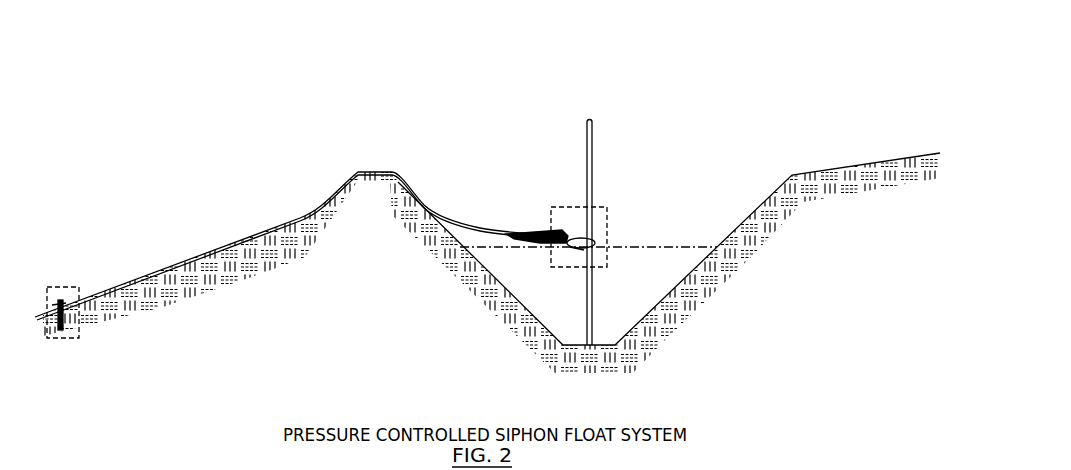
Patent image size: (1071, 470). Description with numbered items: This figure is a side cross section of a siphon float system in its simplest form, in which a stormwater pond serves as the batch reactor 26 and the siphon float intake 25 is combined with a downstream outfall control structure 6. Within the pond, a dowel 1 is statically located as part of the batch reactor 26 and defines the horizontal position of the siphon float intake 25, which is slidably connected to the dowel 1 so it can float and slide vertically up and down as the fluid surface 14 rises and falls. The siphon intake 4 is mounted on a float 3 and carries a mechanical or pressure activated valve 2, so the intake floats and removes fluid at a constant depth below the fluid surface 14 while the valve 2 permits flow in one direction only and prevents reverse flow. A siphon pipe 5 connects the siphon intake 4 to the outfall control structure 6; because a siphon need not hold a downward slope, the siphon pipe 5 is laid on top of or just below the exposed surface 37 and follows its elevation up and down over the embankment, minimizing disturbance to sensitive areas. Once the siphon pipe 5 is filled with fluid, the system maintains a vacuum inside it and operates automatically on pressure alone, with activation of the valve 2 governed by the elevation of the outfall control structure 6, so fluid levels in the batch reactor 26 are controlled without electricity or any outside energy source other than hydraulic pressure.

The dowel 1 is at (607, 233).
The valve 2 is at (537, 223).
The float 3 is at (601, 227).
The siphon intake 4 is at (564, 264).
The siphon pipe 5 is at (300, 243).
The outfall control structure 6 is at (63, 294).
The fluid surface 14 is at (588, 233).
The siphon float intake 25 is at (601, 225).
The batch reactor 26 is at (566, 292).
The exposed surface 37 is at (777, 249).